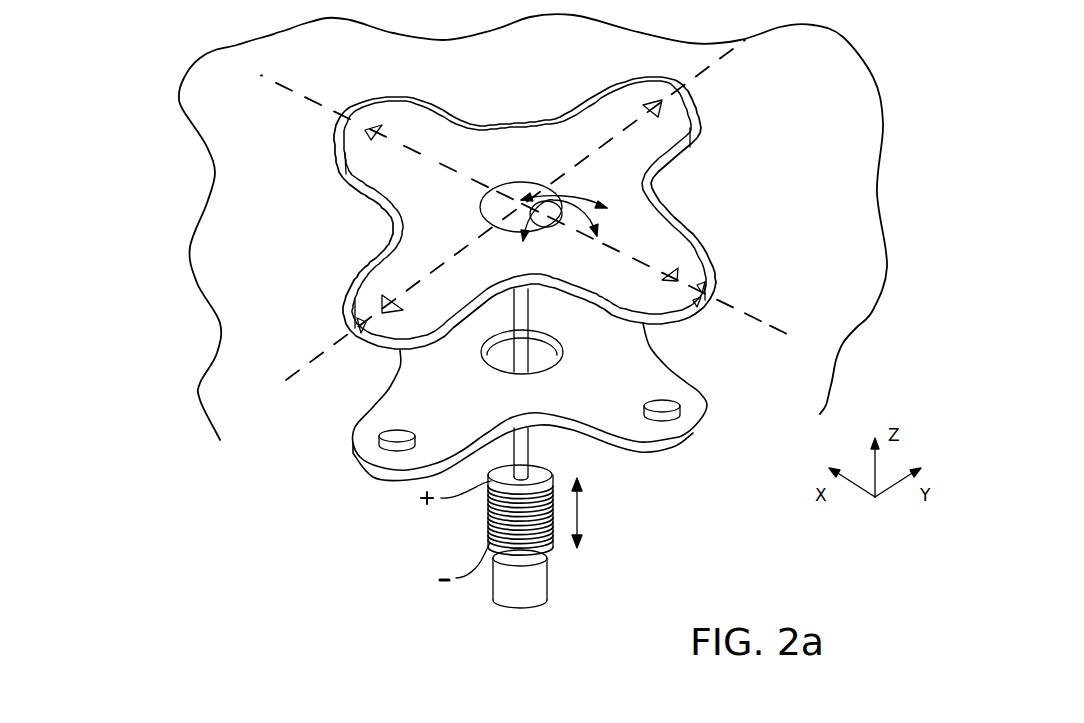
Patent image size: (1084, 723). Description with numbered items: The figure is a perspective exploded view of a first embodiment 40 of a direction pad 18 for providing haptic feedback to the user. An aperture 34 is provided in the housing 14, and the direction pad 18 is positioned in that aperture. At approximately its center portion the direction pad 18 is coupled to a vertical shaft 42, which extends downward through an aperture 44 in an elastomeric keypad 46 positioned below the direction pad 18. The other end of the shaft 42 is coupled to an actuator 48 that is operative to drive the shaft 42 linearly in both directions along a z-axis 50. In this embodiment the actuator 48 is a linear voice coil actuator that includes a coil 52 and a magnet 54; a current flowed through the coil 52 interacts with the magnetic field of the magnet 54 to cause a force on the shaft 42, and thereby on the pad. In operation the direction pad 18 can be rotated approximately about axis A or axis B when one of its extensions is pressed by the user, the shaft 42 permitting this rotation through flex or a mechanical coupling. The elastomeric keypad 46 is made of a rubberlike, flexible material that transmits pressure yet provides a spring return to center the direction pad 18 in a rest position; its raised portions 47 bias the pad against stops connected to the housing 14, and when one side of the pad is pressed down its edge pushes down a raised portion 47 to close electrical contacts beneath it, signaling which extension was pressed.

The housing 14 is at (852, 139).
The direction pad 18 is at (663, 248).
The aperture 34 is at (352, 291).
The first embodiment 40 is at (158, 78).
The vertical shaft 42 is at (524, 313).
The aperture 44 is at (503, 357).
The elastomeric keypad 46 is at (643, 373).
The raised portions 47 is at (394, 446).
The actuator 48 is at (480, 523).
The z-axis 50 is at (580, 511).
The coil 52 is at (552, 534).
The magnet 54 is at (547, 593).